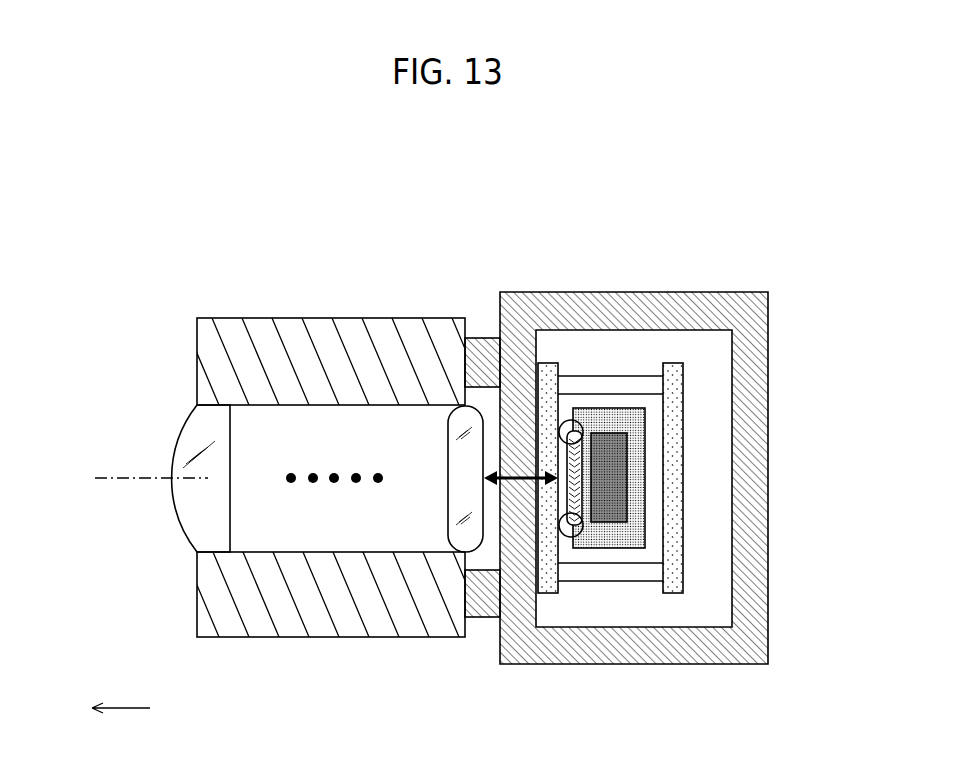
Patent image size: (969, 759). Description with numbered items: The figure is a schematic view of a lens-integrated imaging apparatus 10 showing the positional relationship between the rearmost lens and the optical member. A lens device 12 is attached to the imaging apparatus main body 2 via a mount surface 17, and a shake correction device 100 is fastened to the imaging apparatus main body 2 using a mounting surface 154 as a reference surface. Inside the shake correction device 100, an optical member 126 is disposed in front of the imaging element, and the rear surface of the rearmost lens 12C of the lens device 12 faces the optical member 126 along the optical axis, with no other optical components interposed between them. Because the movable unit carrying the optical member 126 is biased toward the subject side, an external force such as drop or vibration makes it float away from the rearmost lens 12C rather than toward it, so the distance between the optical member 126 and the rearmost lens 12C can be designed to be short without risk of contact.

The imaging apparatus 10 is at (495, 190).
The lens device 12 is at (322, 328).
The rearmost lens 12C is at (455, 504).
The mount surface 17 is at (463, 594).
The imaging apparatus main body 2 is at (581, 292).
The shake correction device 100 is at (643, 360).
The optical member 126 is at (592, 473).
The mounting surface 154 is at (533, 525).